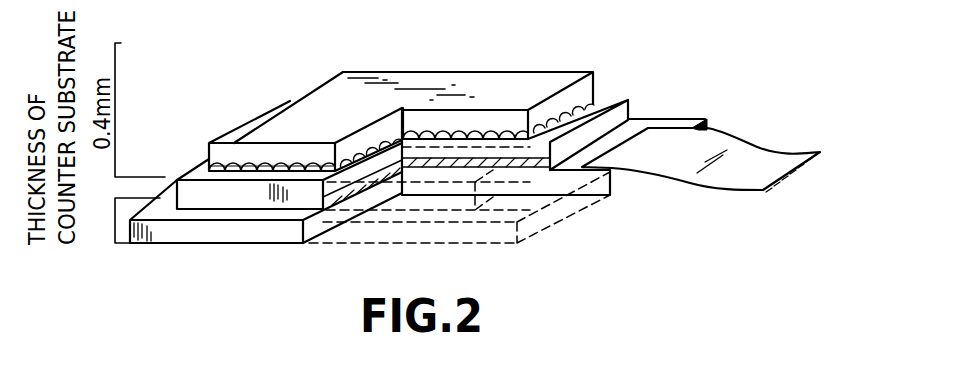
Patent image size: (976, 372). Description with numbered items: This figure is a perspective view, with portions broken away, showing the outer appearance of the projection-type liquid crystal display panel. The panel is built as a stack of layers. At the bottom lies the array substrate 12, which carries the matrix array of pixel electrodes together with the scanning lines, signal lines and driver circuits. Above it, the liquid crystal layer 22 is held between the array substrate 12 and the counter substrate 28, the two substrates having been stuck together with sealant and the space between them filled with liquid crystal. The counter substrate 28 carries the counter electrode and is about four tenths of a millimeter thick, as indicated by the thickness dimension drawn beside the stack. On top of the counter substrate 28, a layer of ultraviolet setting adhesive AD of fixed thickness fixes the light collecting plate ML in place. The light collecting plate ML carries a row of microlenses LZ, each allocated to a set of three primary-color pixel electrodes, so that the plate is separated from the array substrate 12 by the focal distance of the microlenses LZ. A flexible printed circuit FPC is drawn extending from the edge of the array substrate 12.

The light collecting plate ML is at (548, 77).
The microlens LZ is at (233, 163).
The ultraviolet setting adhesive AD is at (204, 165).
The counter substrate 28 is at (630, 100).
The liquid crystal layer 22 is at (630, 120).
The array substrate 12 is at (698, 120).
The flexible printed circuit FPC is at (701, 175).